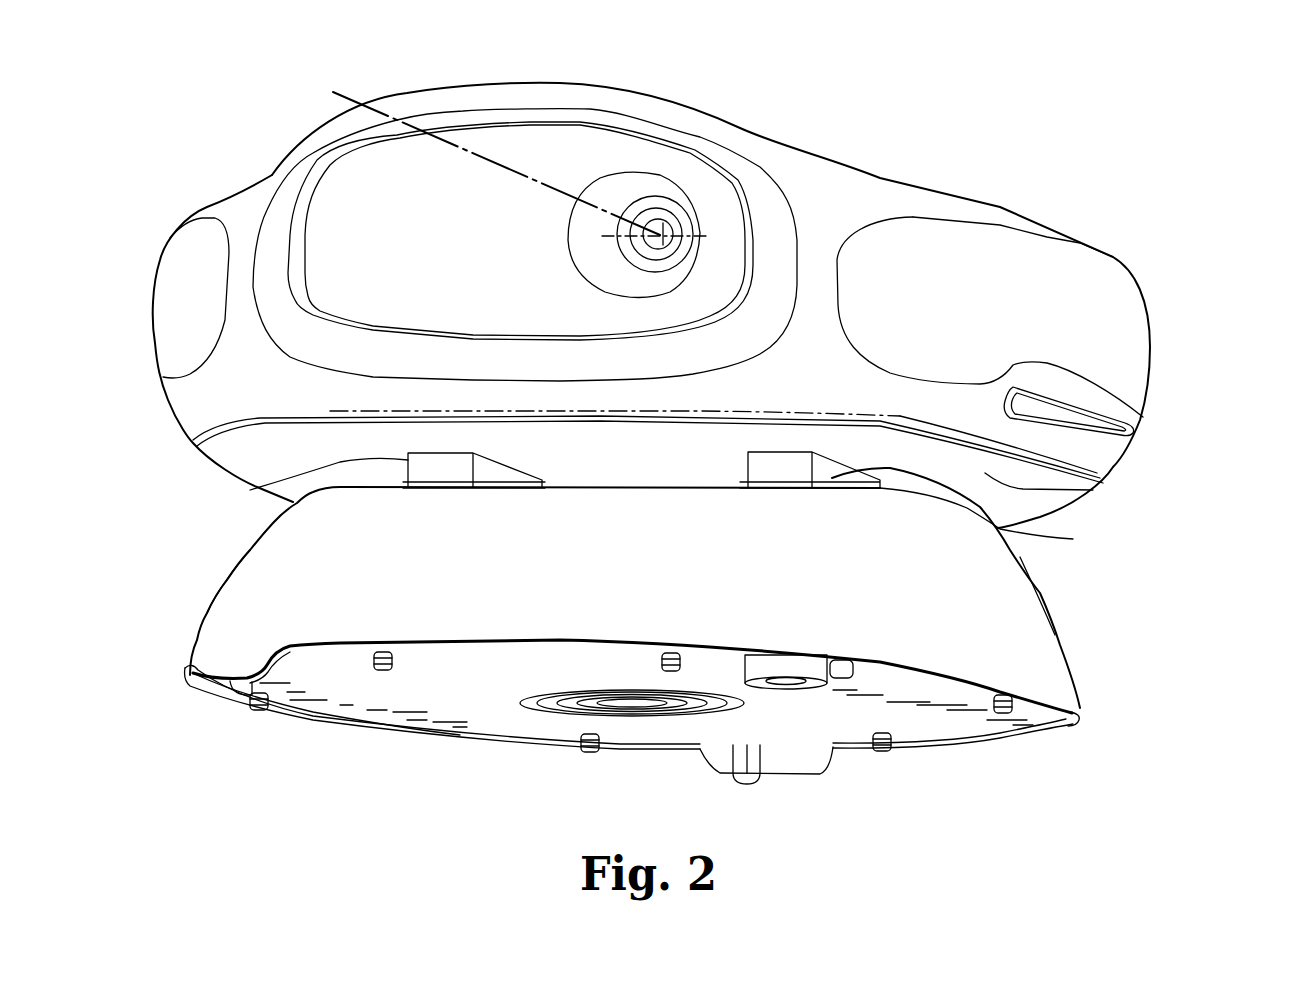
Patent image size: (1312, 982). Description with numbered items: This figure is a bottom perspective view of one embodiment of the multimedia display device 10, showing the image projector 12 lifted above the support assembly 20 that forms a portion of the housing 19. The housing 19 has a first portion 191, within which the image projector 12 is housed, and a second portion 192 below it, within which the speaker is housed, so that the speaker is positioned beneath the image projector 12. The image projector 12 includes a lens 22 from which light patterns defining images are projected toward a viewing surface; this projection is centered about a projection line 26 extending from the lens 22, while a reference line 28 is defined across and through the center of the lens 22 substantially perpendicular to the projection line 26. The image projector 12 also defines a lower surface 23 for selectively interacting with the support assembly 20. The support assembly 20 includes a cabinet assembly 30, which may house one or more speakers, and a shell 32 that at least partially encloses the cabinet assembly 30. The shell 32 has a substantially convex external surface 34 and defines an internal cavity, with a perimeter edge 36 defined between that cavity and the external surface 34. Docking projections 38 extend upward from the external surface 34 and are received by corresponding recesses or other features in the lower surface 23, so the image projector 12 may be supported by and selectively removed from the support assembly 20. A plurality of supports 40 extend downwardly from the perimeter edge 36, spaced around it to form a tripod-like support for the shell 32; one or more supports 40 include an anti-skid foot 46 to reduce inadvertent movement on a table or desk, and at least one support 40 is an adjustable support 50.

The multimedia display device 10 is at (1086, 148).
The image projector 12 is at (884, 198).
The housing 19 is at (1207, 310).
The first portion 191 is at (1176, 389).
The support assembly 20 is at (1078, 591).
The second portion 192 is at (1076, 620).
The lens 22 is at (660, 232).
The lower surface 23 is at (1093, 490).
The projection line 26 is at (345, 105).
The reference line 28 is at (697, 232).
The cabinet assembly 30 is at (1054, 730).
The shell 32 is at (1035, 660).
The external surface 34 is at (285, 548).
The perimeter edge 36 is at (357, 728).
The docking projections 38 is at (250, 490).
The supports 40 is at (246, 730).
The anti-skid foot 46 is at (747, 782).
The adjustable support 50 is at (820, 713).